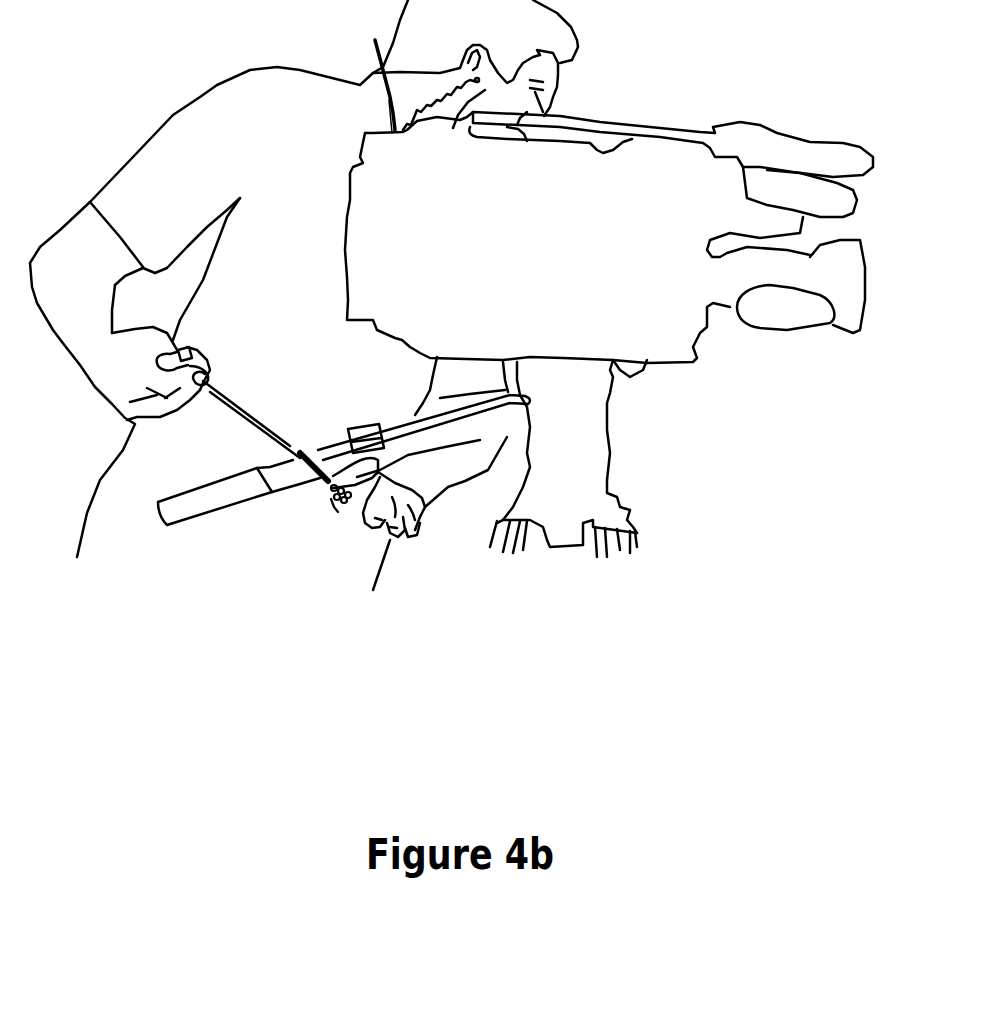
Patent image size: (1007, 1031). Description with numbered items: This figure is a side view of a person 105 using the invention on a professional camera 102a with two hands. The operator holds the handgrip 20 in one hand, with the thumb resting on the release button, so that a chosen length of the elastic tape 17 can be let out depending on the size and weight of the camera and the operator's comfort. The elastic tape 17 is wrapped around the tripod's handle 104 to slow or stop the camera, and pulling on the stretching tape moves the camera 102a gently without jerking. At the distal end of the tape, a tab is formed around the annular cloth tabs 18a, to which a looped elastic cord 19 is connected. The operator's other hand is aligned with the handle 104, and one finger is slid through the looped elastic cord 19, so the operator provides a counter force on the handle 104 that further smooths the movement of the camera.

The person 105 is at (173, 108).
The camera 102a is at (702, 133).
The elastic tape 17 is at (255, 418).
The annular cloth tabs 18a is at (320, 452).
The looped elastic cord 19 is at (342, 507).
The handgrip 20 is at (208, 356).
The handle 104 is at (200, 513).